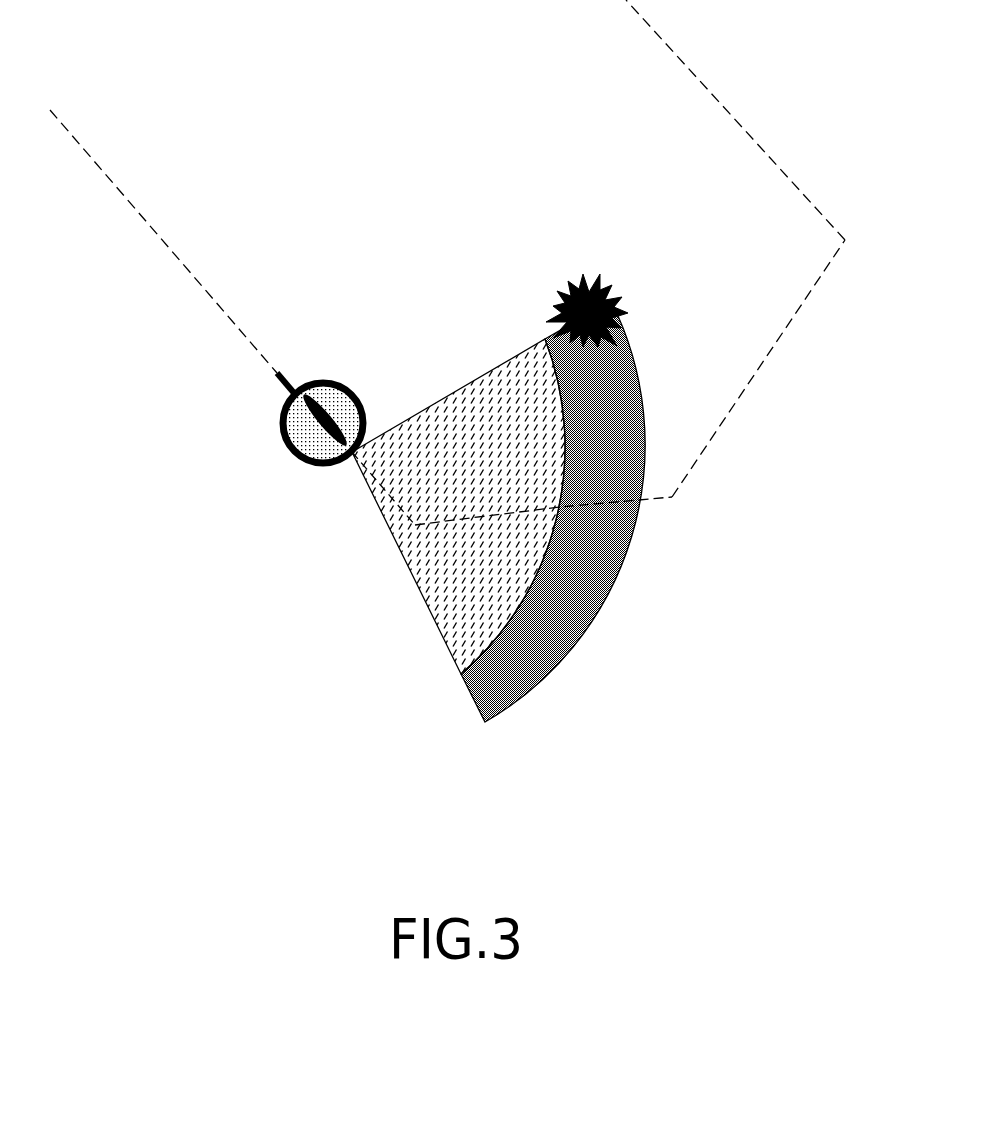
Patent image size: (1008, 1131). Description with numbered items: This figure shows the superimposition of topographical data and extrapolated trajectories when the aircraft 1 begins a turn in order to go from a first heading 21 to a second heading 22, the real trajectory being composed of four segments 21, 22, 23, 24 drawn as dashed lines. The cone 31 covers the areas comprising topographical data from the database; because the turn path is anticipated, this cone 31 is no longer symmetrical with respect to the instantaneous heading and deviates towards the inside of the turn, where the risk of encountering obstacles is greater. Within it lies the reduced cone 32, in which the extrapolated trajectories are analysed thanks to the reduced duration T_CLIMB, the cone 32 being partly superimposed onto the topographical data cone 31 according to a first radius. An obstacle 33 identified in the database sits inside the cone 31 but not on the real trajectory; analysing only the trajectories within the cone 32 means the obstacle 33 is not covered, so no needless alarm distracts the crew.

The aircraft 1 is at (335, 372).
The first heading 21 is at (162, 285).
The second heading 22 is at (650, 505).
The segment 23 is at (753, 393).
The segment 24 is at (797, 160).
The cone 31 is at (467, 688).
The reduced cone 32 is at (440, 580).
The obstacle 33 is at (587, 285).